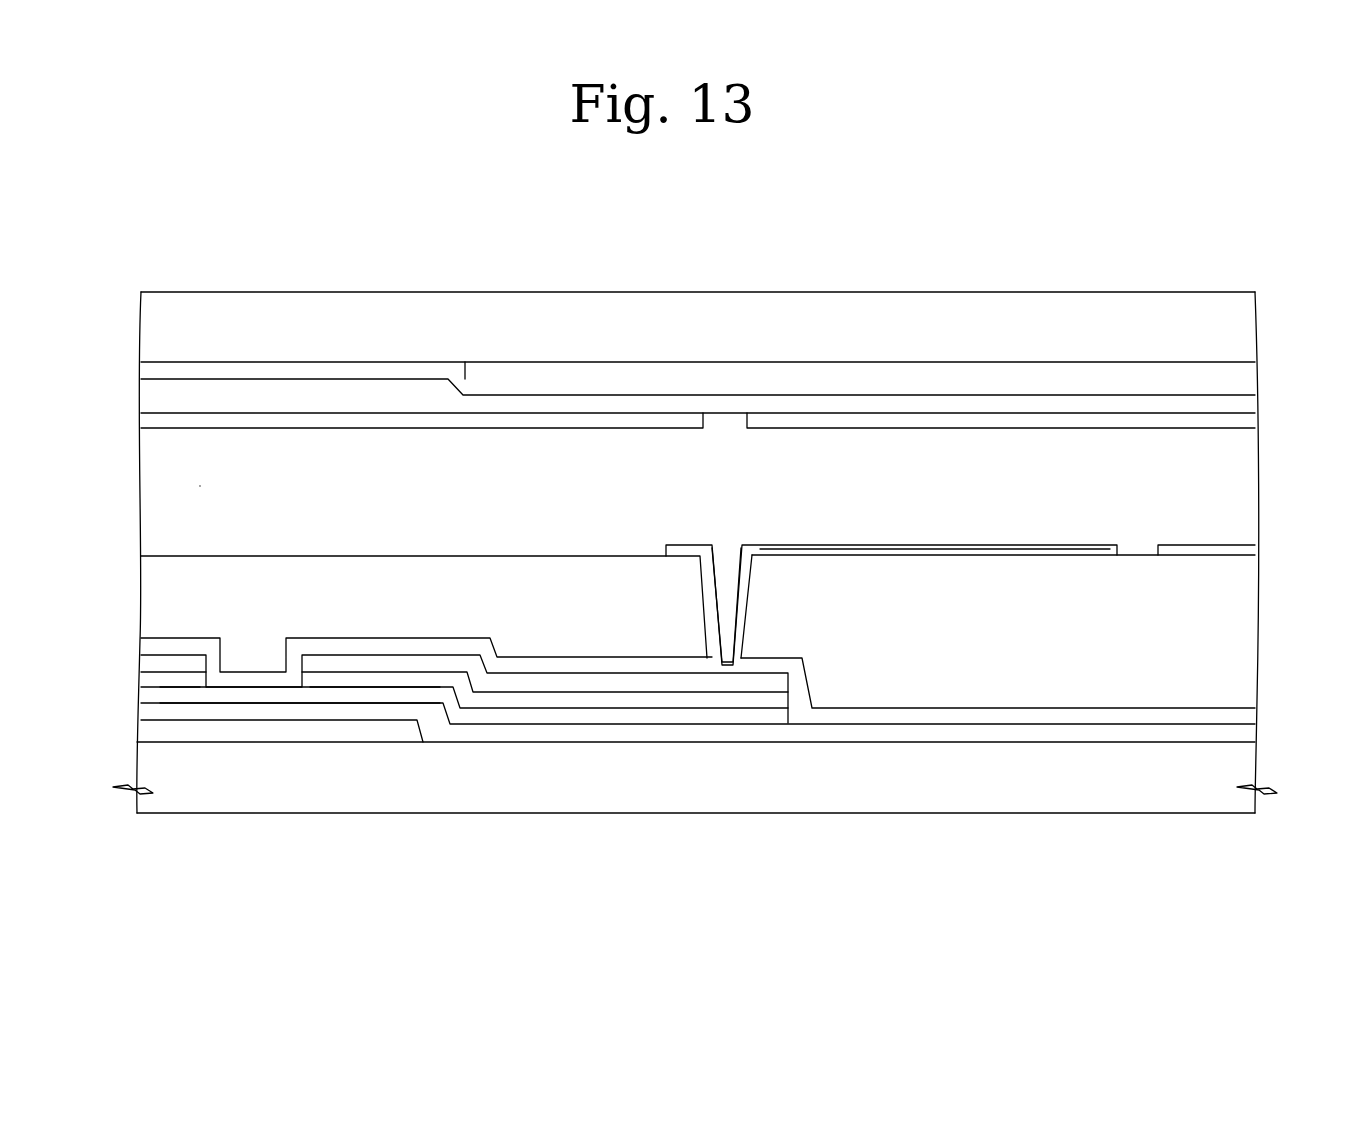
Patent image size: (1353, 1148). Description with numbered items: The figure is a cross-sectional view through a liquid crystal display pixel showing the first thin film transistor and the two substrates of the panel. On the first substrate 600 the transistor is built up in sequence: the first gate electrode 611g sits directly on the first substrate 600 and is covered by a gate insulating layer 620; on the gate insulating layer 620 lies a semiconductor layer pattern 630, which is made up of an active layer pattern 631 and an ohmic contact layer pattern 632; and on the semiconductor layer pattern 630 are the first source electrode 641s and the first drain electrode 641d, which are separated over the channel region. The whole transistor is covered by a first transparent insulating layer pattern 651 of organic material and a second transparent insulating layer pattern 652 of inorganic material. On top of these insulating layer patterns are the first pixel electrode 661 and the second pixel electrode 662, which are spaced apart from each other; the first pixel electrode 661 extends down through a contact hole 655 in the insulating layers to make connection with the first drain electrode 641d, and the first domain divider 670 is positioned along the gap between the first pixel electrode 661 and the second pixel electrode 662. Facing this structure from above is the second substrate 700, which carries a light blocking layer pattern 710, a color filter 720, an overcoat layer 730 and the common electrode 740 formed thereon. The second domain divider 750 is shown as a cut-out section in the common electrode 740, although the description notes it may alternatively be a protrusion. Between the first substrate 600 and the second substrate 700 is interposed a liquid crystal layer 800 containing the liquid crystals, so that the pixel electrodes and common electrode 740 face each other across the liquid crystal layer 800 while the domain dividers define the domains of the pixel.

The second substrate 700 is at (1245, 325).
The light blocking layer pattern 710 is at (289, 367).
The color filter 720 is at (1245, 373).
The overcoat layer 730 is at (1245, 401).
The common electrode 740 is at (1245, 418).
The second domain divider 750 is at (727, 420).
The liquid crystal layer 800 is at (1247, 490).
The second pixel electrode 662 is at (1245, 549).
The first domain divider 670 is at (1140, 553).
The first pixel electrode 661 is at (943, 550).
The contact hole 655 is at (752, 640).
The first transparent insulating layer pattern 651 is at (155, 584).
The second transparent insulating layer pattern 652 is at (580, 565).
The first source electrode 641s is at (147, 664).
The first drain electrode 641d is at (392, 665).
The semiconductor layer pattern 630 is at (155, 870).
The ohmic contact layer pattern 632 is at (178, 680).
The active layer pattern 631 is at (248, 698).
The gate insulating layer 620 is at (1245, 726).
The first gate electrode 611g is at (407, 732).
The first substrate 600 is at (1245, 760).